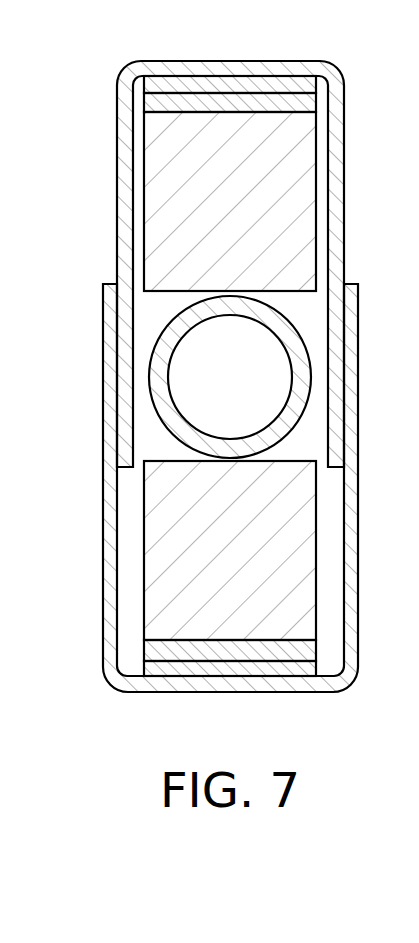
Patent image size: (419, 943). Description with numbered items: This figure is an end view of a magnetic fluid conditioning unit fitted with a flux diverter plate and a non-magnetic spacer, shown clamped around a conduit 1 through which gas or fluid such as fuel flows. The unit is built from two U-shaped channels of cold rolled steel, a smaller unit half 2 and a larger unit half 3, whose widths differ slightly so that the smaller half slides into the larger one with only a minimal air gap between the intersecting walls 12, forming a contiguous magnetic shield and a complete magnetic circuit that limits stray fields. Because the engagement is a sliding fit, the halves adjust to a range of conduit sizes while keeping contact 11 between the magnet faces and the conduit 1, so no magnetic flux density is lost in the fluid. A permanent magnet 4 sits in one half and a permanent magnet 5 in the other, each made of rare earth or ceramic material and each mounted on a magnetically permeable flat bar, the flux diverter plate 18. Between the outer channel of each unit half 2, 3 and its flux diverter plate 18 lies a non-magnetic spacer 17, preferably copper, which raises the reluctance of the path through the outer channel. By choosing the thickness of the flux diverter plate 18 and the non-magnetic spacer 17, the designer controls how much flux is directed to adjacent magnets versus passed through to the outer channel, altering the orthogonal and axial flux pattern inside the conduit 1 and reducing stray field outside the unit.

The conduit 1 is at (300, 338).
The unit half 2 is at (345, 197).
The unit half 3 is at (358, 520).
The permanent magnet 4 is at (147, 568).
The permanent magnet 5 is at (147, 182).
The contact 11 is at (267, 457).
The intersecting walls 12 is at (113, 369).
The non-magnetic spacer 17 is at (243, 85).
The flux diverter plate 18 is at (293, 107).